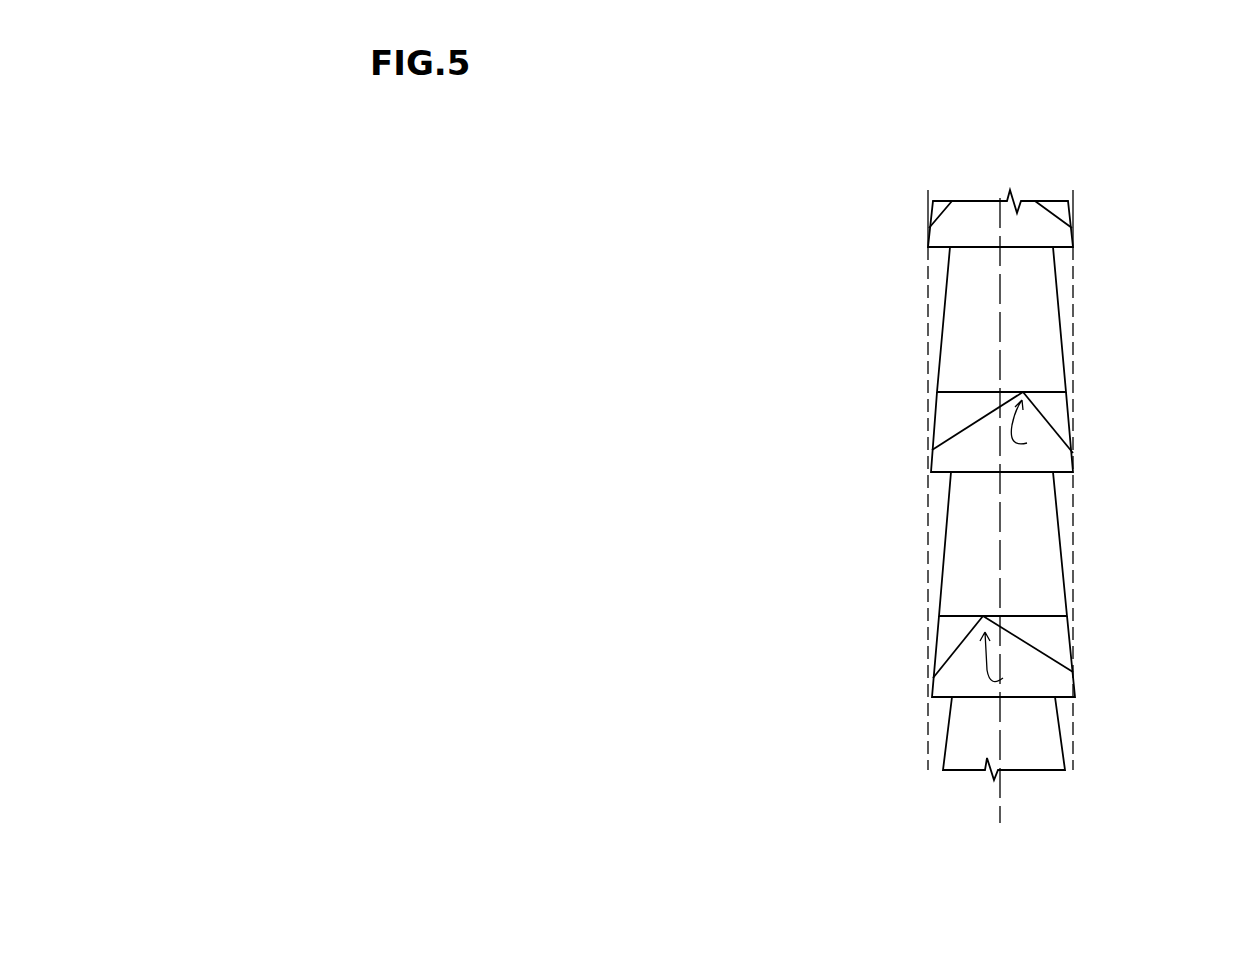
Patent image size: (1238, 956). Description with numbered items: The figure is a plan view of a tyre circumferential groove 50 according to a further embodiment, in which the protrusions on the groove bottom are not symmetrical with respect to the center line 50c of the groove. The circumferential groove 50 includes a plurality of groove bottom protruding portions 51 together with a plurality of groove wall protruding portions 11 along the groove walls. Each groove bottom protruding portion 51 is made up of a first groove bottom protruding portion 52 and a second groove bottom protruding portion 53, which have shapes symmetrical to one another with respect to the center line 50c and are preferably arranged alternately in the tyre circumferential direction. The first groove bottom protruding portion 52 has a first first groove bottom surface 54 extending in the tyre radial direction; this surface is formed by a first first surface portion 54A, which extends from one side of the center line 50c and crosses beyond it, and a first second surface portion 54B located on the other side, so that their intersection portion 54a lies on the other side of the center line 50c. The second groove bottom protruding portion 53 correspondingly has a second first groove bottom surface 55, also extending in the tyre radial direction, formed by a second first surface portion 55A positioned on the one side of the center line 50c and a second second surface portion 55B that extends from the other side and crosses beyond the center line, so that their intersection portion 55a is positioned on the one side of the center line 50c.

The circumferential groove 50 is at (1122, 178).
The center line 50c is at (1000, 198).
The groove wall protruding portion 11 is at (1062, 288).
The groove bottom protruding portion 51 is at (1000, 431).
The first groove bottom protruding portion 52 is at (968, 373).
The second groove bottom protruding portion 53 is at (1032, 578).
The first first groove bottom surface 54 is at (860, 452).
The first first surface portion 54A is at (974, 436).
The first second surface portion 54B is at (1049, 440).
The intersection portion 54a is at (1027, 443).
The second first groove bottom surface 55 is at (862, 732).
The second first surface portion 55A is at (964, 661).
The second second surface portion 55B is at (1049, 670).
The intersection portion 55a is at (1003, 678).